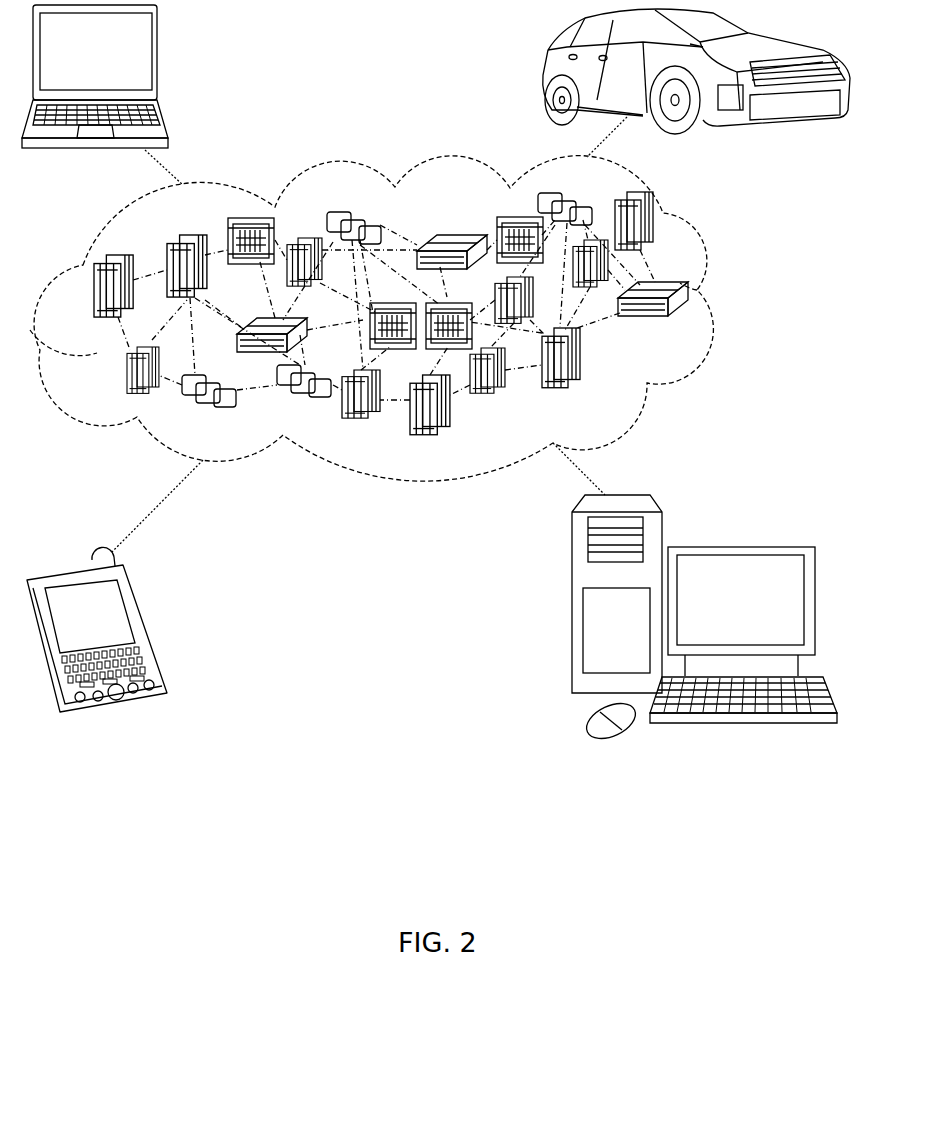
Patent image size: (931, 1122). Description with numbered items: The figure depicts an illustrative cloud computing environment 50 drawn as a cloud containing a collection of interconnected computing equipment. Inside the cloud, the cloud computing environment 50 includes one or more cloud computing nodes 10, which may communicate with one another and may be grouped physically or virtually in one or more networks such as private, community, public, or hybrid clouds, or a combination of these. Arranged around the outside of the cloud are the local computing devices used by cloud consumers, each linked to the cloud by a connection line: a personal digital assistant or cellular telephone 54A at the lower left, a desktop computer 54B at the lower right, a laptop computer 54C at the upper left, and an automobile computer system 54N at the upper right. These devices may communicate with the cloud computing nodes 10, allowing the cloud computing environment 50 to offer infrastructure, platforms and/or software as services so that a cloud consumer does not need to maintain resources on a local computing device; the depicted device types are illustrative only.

The cloud computing node 10 is at (692, 326).
The cloud computing environment 50 is at (740, 297).
The personal digital assistant or cellular telephone 54A is at (147, 628).
The desktop computer 54B is at (737, 545).
The laptop computer 54C is at (158, 56).
The automobile computer system 54N is at (544, 74).